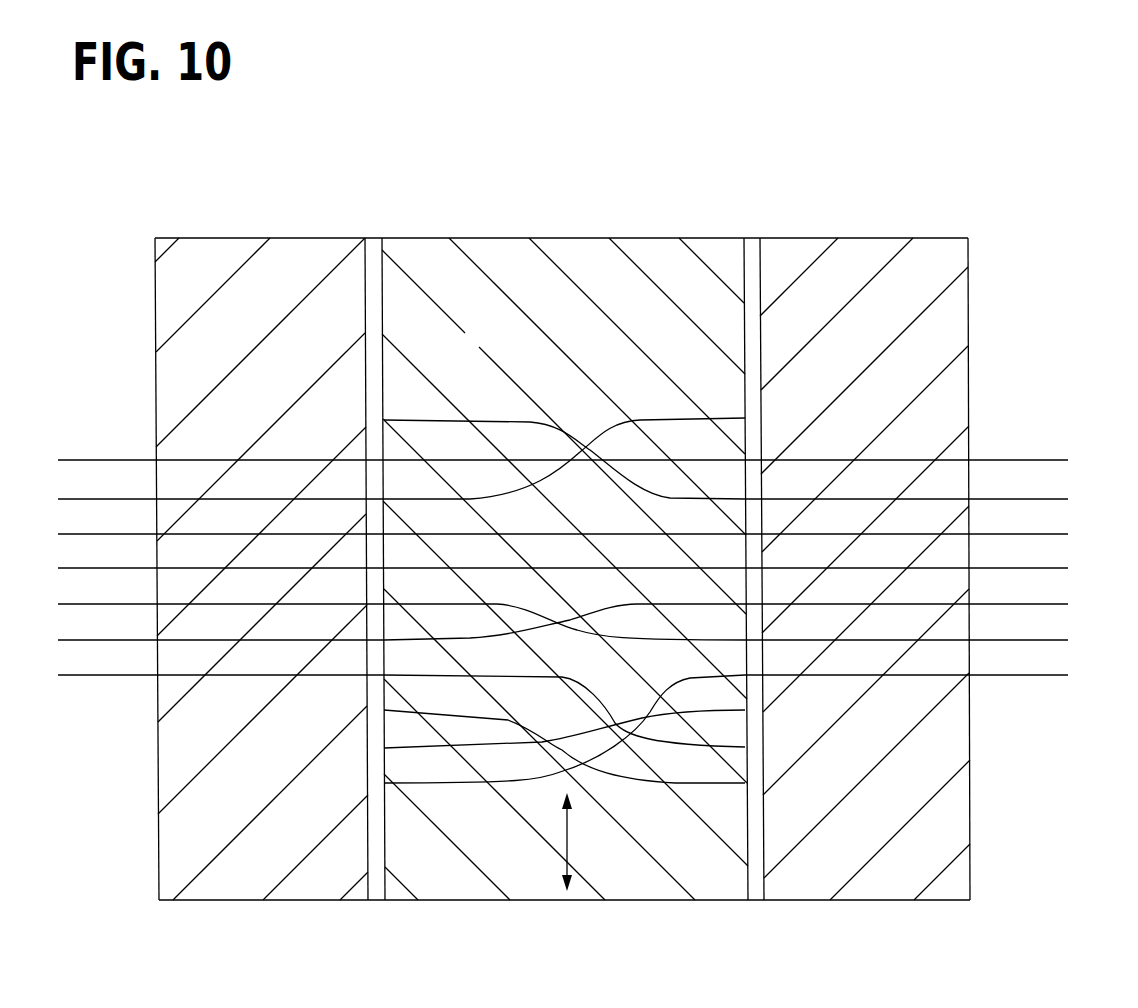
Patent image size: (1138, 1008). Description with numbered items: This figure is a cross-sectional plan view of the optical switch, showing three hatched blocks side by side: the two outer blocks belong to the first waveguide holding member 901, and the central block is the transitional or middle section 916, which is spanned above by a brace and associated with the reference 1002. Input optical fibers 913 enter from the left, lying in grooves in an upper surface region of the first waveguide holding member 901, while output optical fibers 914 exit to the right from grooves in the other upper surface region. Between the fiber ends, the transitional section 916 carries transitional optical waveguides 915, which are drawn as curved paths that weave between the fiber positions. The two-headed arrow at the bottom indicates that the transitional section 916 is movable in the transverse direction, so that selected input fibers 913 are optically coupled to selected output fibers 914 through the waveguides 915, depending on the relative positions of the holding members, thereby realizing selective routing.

The first waveguide holding member 901 is at (239, 236).
The transitional section 916 is at (744, 238).
The gap / interface region 1002 is at (694, 185).
The input optical fibers 913 is at (60, 458).
The output optical fibers 914 is at (1022, 458).
The transitional optical waveguides 915 is at (485, 422).